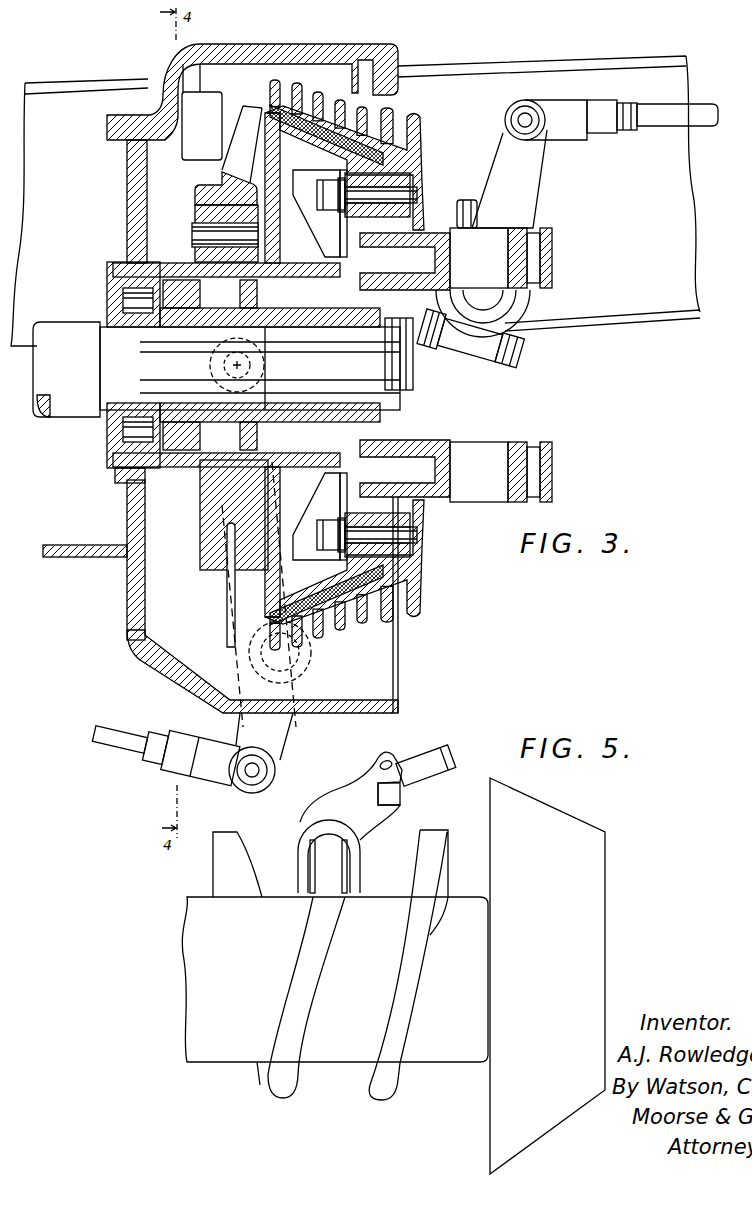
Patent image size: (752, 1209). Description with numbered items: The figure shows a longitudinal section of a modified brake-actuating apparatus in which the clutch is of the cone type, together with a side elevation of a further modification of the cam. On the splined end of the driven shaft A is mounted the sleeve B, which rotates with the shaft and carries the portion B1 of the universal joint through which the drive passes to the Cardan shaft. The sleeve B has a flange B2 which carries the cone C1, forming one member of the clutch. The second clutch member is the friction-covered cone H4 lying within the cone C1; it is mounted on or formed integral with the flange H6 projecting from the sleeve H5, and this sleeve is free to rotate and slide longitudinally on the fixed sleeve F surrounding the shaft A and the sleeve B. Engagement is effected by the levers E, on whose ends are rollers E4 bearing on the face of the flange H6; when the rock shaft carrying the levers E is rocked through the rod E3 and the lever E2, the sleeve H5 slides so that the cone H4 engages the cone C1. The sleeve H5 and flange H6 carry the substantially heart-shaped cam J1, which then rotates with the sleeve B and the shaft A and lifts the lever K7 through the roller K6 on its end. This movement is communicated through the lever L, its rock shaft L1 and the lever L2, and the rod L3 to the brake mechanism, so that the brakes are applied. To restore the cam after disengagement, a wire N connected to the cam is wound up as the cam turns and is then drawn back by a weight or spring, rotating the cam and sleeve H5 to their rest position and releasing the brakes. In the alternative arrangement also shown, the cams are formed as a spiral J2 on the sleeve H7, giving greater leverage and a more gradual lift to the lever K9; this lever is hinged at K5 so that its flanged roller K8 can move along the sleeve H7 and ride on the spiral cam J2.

In FIG. 3, the driven shaft A is at (125, 375).
In FIG. 3, the sleeve B is at (400, 394).
In FIG. 3, the portion of the universal joint B1 is at (528, 493).
In FIG. 3, the flange B2 is at (368, 553).
In FIG. 3, the cone C1 is at (347, 608).
In FIG. 3, the levers E is at (258, 620).
In FIG. 3, the lever E2 is at (276, 740).
In FIG. 3, the rod E3 is at (108, 735).
In FIG. 3, the rollers E4 is at (213, 373).
In FIG. 3, the fixed sleeve F is at (200, 458).
In FIG. 3, the cone H4 is at (368, 603).
In FIG. 5, the cone H4 is at (592, 915).
In FIG. 3, the sleeve H5 is at (372, 438).
In FIG. 3, the flange H6 is at (252, 582).
In FIG. 5, the sleeve H7 is at (328, 1044).
In FIG. 3, the cam J1 is at (205, 575).
In FIG. 5, the spiral cam J2 is at (388, 1082).
In FIG. 5, the hinge K5 is at (390, 760).
In FIG. 3, the roller K6 is at (222, 218).
In FIG. 3, the lever K7 is at (236, 150).
In FIG. 5, the roller K8 is at (323, 856).
In FIG. 5, the lever K9 is at (345, 793).
In FIG. 3, the lever L is at (421, 188).
In FIG. 3, the rock shaft L1 is at (497, 303).
In FIG. 3, the lever L2 is at (512, 173).
In FIG. 3, the rod L3 is at (669, 127).
In FIG. 3, the wire N is at (272, 583).